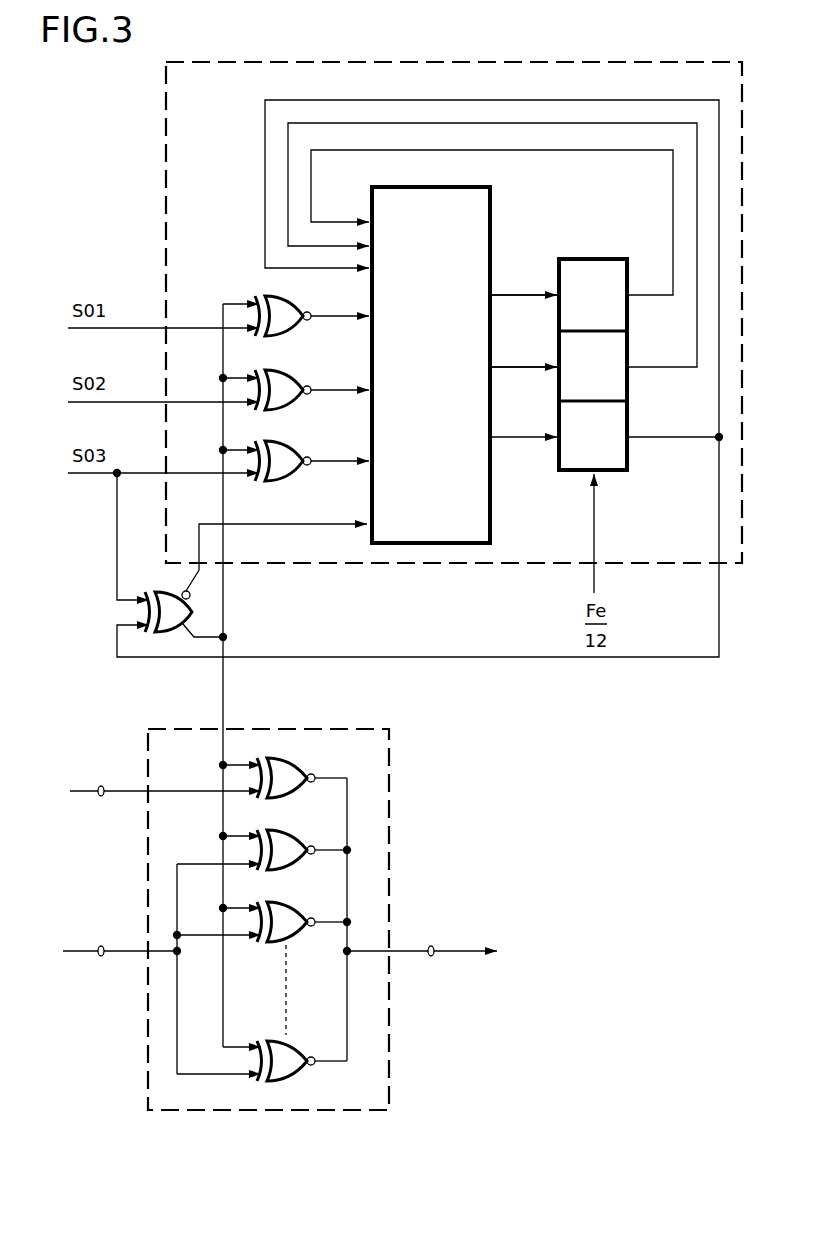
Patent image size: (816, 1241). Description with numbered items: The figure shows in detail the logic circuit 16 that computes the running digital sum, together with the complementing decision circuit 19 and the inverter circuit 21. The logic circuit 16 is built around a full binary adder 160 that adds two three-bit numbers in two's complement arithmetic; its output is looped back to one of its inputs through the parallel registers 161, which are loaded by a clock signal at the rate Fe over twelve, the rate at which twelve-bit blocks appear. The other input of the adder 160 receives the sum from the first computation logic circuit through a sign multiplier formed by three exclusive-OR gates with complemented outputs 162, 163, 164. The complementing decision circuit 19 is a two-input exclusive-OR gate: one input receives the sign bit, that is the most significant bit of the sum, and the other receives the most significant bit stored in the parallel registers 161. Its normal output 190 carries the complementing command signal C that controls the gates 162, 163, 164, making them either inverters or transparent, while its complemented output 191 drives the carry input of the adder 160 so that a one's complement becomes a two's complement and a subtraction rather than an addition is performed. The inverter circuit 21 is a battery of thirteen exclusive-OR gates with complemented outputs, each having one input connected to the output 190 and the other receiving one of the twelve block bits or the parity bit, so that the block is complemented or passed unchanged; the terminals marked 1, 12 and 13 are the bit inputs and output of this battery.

The logic circuit 16 is at (239, 98).
The full binary adder 160 is at (478, 222).
The parallel registers 161 is at (590, 268).
The exclusive-OR gate with complemented output 162 is at (283, 312).
The exclusive-OR gate with complemented output 163 is at (283, 385).
The exclusive-OR gate with complemented output 164 is at (288, 457).
The complementing decision circuit 19 is at (166, 596).
The normal output 190 is at (232, 650).
The complemented output 191 is at (276, 526).
The inverter circuit 21 is at (377, 829).
The input terminal 1 is at (165, 783).
The input terminal 12 is at (120, 943).
The output terminal 13 is at (422, 943).